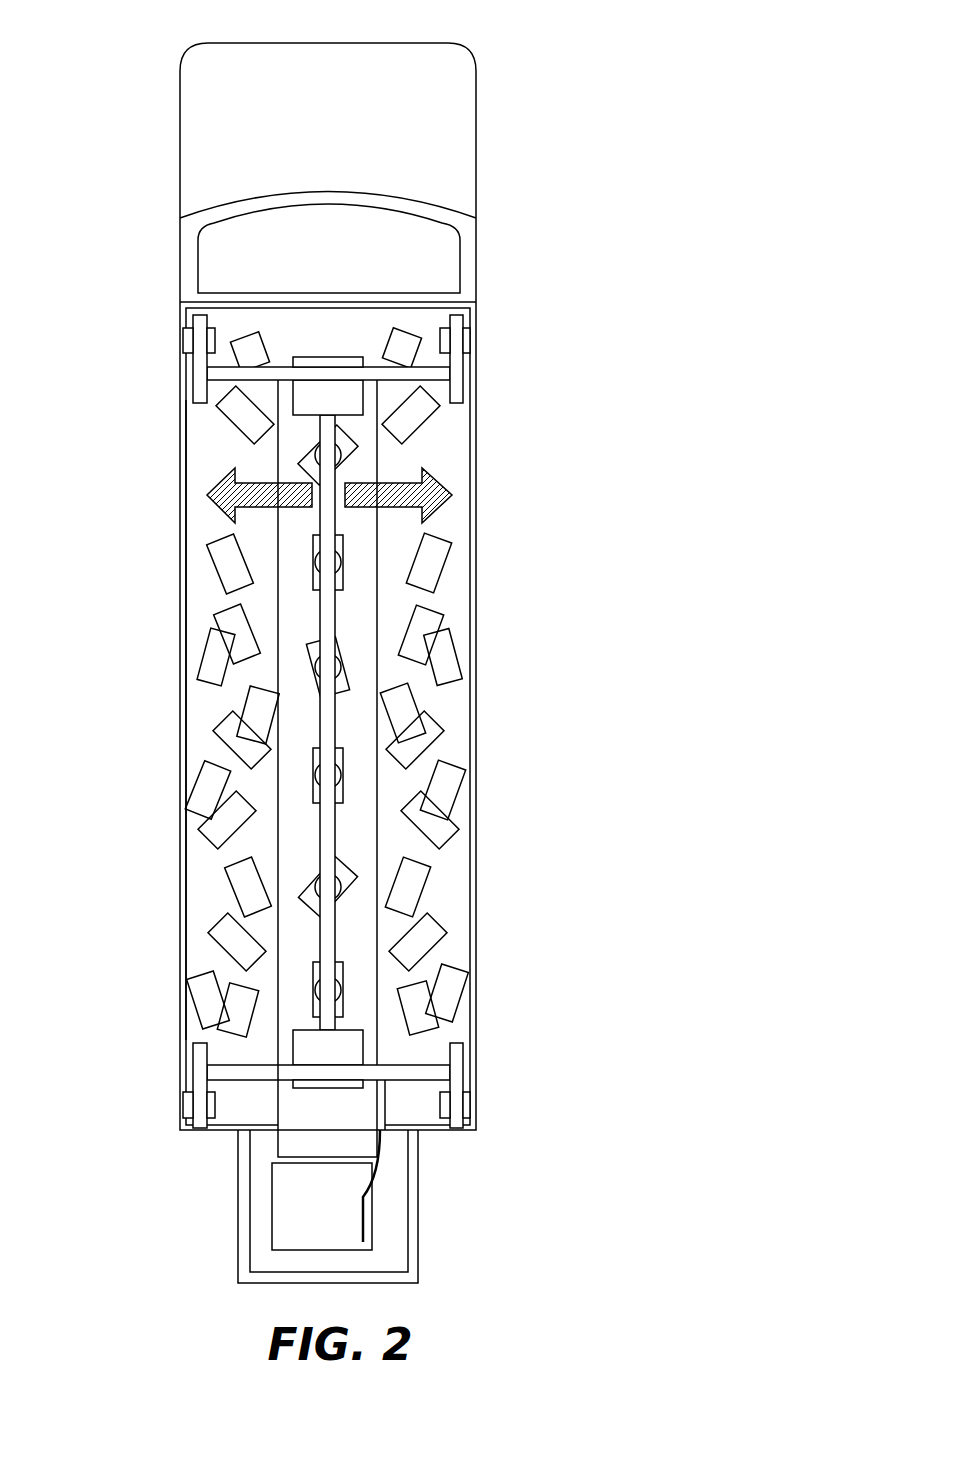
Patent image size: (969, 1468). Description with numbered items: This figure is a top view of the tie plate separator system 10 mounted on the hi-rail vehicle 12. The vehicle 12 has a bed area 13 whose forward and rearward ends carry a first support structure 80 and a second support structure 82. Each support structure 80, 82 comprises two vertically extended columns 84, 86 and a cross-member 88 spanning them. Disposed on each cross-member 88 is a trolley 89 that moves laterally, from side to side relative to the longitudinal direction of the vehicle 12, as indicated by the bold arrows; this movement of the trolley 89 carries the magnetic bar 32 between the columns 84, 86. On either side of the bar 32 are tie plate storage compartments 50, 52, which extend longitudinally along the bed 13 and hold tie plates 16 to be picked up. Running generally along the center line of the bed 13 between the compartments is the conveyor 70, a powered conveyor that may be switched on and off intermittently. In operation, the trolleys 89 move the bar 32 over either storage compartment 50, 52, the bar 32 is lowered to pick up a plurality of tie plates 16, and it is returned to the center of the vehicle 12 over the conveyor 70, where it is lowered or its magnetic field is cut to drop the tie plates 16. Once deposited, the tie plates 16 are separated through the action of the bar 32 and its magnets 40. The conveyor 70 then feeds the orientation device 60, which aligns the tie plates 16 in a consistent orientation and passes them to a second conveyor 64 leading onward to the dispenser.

The tie plate separator system 10 is at (666, 312).
The rail vehicle 12 is at (537, 104).
The bed area 13 is at (522, 705).
The tie plates 16 is at (228, 577).
The magnetic bar 32 is at (337, 483).
The magnets 40 is at (332, 483).
The storage compartment 50 is at (177, 718).
The storage compartment 52 is at (469, 595).
The orientation device 60 is at (442, 1195).
The second conveyor 64 is at (388, 1241).
The conveyor 70 is at (403, 1108).
The first support structure 80 is at (513, 374).
The second support structure 82 is at (513, 1080).
The column 84 is at (188, 340).
The column 86 is at (470, 345).
The cross-member 88 is at (287, 372).
The trolley 89 is at (342, 341).